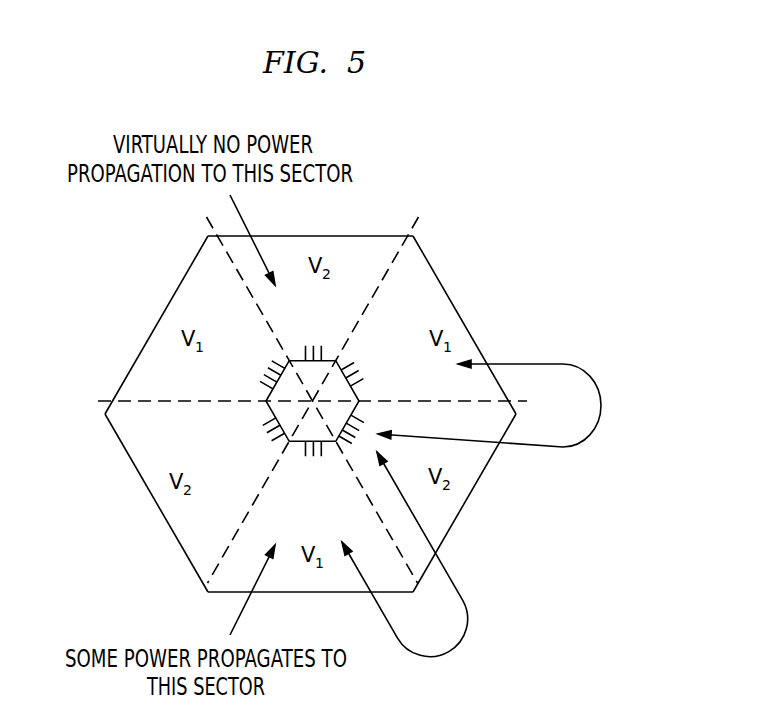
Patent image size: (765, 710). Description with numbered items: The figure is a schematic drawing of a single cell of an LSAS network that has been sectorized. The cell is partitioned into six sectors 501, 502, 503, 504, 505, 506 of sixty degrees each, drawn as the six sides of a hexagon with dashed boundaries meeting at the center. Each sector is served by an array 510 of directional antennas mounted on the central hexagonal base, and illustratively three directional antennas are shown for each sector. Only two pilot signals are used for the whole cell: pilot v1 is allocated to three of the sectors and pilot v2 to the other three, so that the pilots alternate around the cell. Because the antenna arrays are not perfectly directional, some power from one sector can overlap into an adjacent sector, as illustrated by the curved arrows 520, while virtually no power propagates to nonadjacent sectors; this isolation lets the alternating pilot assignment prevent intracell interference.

The sector 501 is at (156, 325).
The sector 502 is at (156, 504).
The sector 503 is at (318, 592).
The sector 504 is at (467, 500).
The sector 505 is at (468, 326).
The sector 506 is at (308, 236).
The array of directional antennas 510 is at (362, 363).
The arrows 520 is at (592, 382).